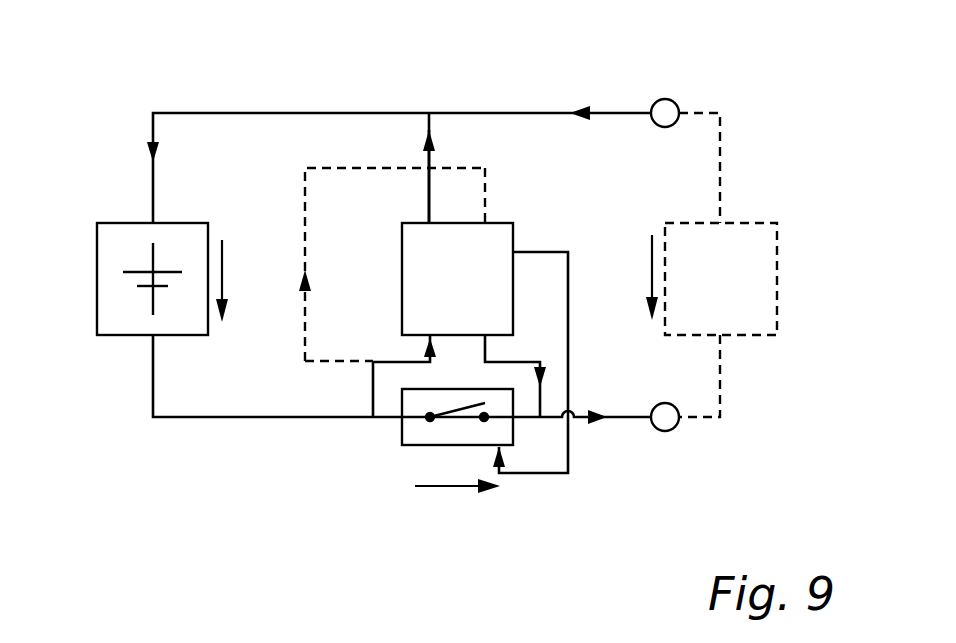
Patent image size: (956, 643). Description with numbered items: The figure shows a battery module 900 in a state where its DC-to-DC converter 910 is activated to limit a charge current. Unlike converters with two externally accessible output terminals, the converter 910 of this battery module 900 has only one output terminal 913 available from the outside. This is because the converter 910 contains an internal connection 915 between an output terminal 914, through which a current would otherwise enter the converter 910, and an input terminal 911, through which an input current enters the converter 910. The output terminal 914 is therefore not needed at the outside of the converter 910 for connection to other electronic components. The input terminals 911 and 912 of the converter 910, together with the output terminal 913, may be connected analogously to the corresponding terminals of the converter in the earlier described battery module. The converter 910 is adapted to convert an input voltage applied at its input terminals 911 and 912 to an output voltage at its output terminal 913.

The battery module 900 is at (418, 315).
The DC-to-DC converter 910 is at (402, 237).
The input terminal 911 is at (422, 337).
The input terminal 912 is at (487, 336).
The output terminal 913 is at (427, 223).
The output terminal 914 is at (481, 222).
The internal connection 915 is at (318, 167).